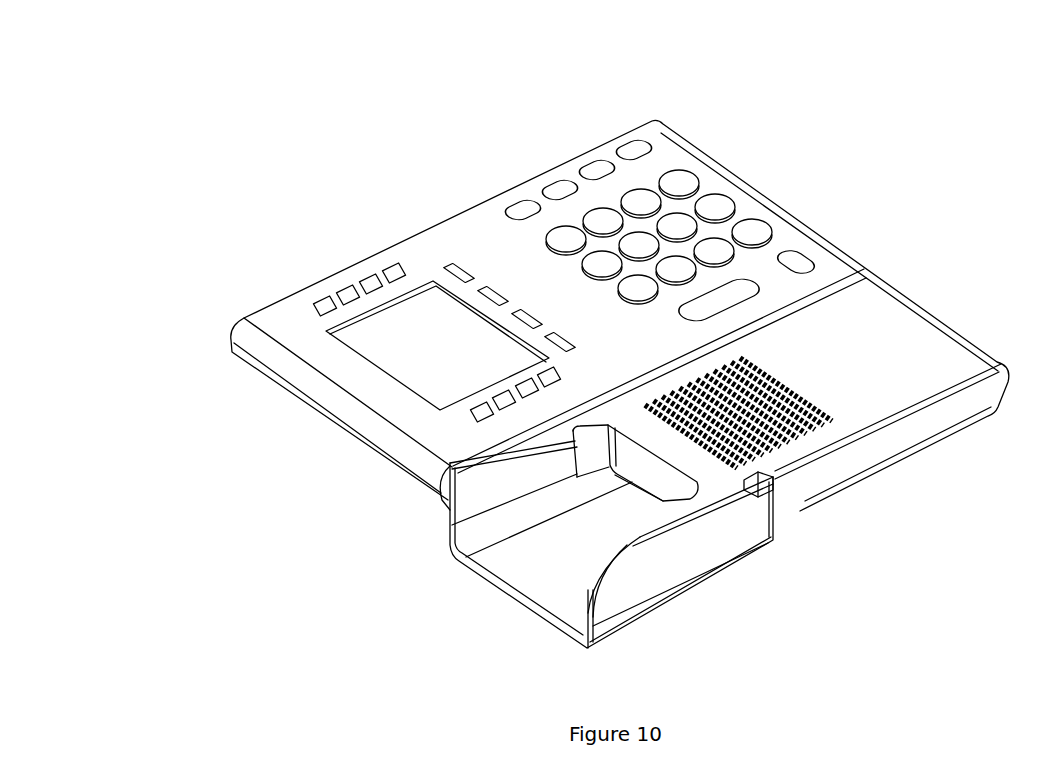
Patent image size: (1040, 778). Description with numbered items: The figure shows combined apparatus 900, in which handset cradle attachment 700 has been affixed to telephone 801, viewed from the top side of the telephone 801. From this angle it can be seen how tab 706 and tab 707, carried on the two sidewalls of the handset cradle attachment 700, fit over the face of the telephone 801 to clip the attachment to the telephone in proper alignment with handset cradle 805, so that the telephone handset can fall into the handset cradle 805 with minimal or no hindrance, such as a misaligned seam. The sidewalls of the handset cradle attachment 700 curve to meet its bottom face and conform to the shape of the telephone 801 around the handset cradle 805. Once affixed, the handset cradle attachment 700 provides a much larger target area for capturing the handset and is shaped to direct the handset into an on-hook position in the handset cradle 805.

The combined apparatus 900 is at (212, 58).
The telephone 801 is at (581, 298).
The handset cradle attachment 700 is at (516, 600).
The tab 707 is at (469, 458).
The handset cradle 805 is at (614, 486).
The tab 706 is at (763, 489).